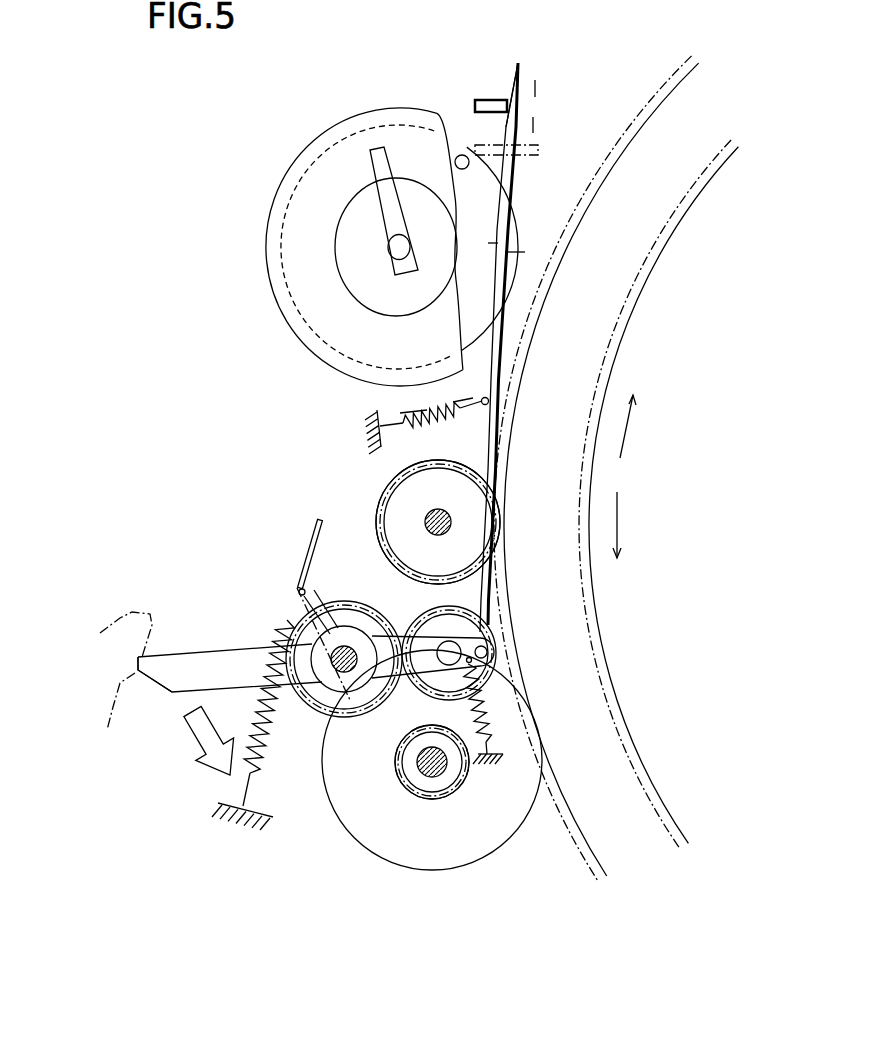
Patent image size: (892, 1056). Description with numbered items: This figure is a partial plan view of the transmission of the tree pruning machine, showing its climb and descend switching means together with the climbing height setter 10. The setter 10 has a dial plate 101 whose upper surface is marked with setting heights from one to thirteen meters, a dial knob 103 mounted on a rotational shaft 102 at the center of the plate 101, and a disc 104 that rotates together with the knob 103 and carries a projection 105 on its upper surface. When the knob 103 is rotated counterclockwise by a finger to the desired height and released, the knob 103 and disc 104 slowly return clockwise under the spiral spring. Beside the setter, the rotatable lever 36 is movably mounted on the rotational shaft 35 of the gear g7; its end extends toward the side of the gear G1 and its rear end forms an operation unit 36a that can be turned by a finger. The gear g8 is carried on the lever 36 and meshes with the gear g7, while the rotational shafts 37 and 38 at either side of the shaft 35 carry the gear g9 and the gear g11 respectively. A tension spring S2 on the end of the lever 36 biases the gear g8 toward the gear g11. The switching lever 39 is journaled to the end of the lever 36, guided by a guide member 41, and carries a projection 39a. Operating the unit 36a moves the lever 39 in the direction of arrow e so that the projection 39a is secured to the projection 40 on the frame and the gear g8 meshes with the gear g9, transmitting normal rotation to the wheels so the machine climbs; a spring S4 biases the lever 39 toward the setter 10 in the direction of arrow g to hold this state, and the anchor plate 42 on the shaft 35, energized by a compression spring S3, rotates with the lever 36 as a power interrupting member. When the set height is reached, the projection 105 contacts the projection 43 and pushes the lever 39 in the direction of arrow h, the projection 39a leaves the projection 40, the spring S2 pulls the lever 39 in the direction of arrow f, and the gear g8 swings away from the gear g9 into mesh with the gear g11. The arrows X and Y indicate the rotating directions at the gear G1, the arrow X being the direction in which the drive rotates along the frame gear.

The climbing height setter 10 is at (446, 261).
The rotational shaft 35 is at (347, 675).
The rotatable lever 36 is at (227, 657).
The operation unit 36a is at (190, 655).
The rotational shaft 37 is at (446, 517).
The rotational shaft 38 is at (425, 774).
The switching lever 39 is at (499, 347).
The projection 39a is at (500, 125).
The projection 40 is at (505, 127).
The guide member 41 is at (538, 158).
The anchor plate 42 is at (327, 679).
The projection 43 is at (498, 238).
The dial plate 101 is at (323, 360).
The rotational shaft 102 is at (399, 260).
The dial knob 103 is at (378, 210).
The disc 104 is at (302, 313).
The projection 105 is at (440, 135).
The gear G1 is at (676, 229).
The tension spring S2 is at (488, 729).
The compression spring S3 is at (257, 776).
The spring S4 is at (453, 417).
The gear g7 is at (297, 622).
The gear g8 is at (457, 735).
The gear g9 is at (380, 504).
The gear g11 is at (453, 796).
The direction of rotation X is at (635, 427).
The direction Y is at (626, 525).
The direction of movement e is at (542, 89).
The direction of movement f is at (538, 124).
The direction of bias g is at (403, 402).
The direction of movement h is at (545, 254).